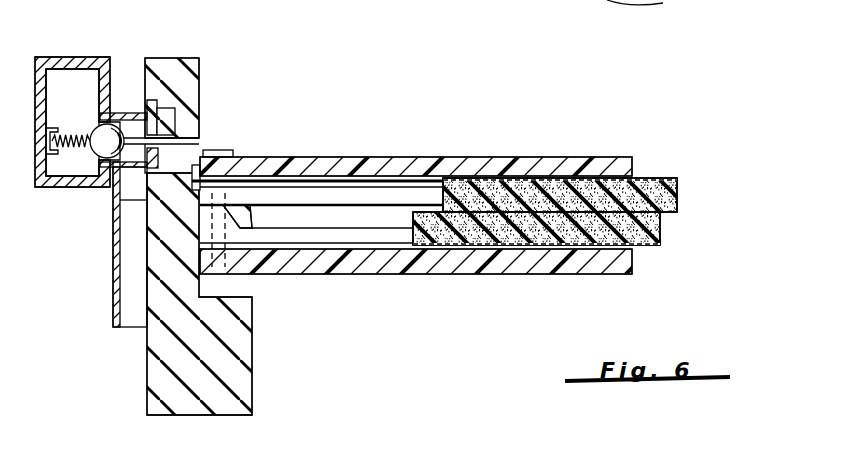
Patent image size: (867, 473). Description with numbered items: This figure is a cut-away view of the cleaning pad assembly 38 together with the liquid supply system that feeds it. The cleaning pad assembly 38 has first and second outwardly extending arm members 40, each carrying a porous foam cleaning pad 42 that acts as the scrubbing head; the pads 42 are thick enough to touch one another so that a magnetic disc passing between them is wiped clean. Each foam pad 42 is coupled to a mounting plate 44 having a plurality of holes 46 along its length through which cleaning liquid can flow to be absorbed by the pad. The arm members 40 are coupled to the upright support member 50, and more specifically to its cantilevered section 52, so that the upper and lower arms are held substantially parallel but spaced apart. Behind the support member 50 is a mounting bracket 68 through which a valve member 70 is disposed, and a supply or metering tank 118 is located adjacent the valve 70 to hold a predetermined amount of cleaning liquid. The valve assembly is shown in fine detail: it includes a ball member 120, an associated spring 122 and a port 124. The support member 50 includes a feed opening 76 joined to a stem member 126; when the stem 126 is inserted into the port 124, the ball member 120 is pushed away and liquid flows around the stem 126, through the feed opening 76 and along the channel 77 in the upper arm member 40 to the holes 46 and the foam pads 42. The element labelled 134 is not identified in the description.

The cleaning pad assembly 38 is at (480, 203).
The arm member 40 is at (543, 165).
The foam cleaning pad 42 is at (665, 178).
The mounting plate 44 is at (645, 178).
The holes 46 is at (457, 180).
The upright support member 50 is at (238, 393).
The cantilevered section 52 is at (252, 212).
The mounting bracket 68 is at (113, 306).
The valve member 70 is at (138, 113).
The feed opening 76 is at (200, 167).
The channel 77 is at (287, 181).
The metering tank 118 is at (77, 57).
The ball member 120 is at (103, 188).
The spring 122 is at (78, 149).
The port 124 is at (160, 130).
The stem member 126 is at (150, 130).
The lead 134 is at (700, 0).